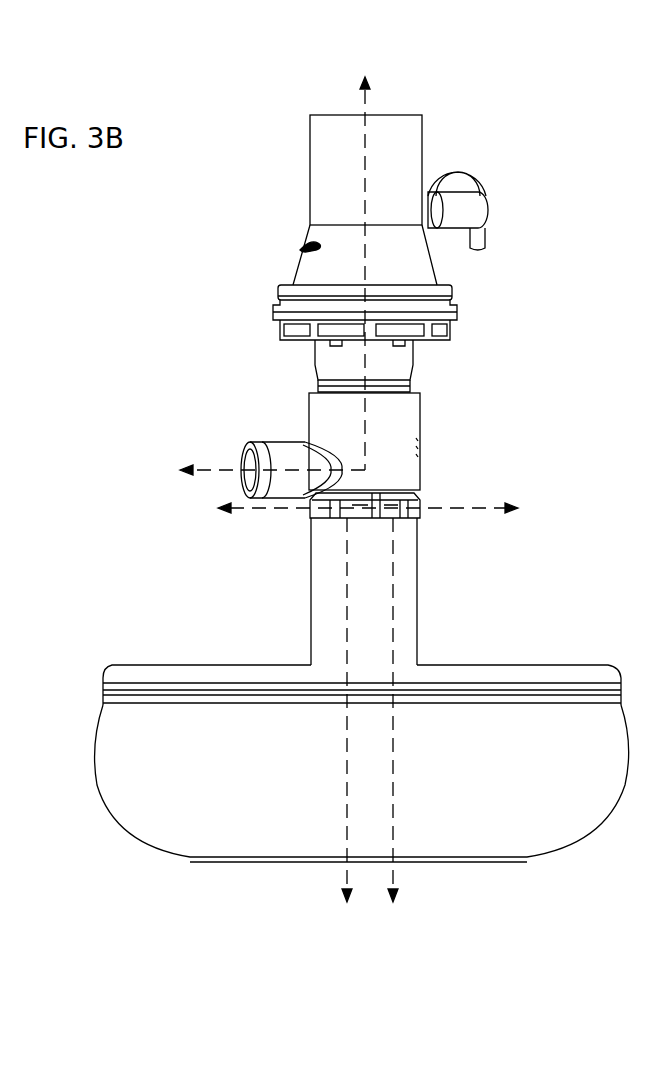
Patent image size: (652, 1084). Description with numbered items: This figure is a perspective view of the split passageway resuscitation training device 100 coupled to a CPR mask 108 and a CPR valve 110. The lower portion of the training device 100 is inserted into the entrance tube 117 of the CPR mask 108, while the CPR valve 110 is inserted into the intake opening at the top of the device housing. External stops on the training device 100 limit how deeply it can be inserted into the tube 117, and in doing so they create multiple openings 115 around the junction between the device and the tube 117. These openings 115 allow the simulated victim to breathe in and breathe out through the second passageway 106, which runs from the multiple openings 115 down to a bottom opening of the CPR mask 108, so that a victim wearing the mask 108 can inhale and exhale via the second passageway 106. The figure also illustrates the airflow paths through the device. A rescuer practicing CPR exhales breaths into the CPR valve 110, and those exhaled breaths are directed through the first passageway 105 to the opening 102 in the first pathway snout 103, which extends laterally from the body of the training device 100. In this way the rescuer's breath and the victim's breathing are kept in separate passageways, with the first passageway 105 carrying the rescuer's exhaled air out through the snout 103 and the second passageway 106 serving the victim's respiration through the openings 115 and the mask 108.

The split passageway resuscitation training device 100 is at (451, 424).
The opening 102 is at (222, 485).
The first pathway snout 103 is at (290, 457).
The first passageway 105 is at (365, 115).
The second passageway 106 is at (248, 510).
The CPR mask 108 is at (547, 725).
The CPR valve 110 is at (262, 131).
The multiple openings 115 is at (304, 516).
The entrance tube 117 is at (412, 590).